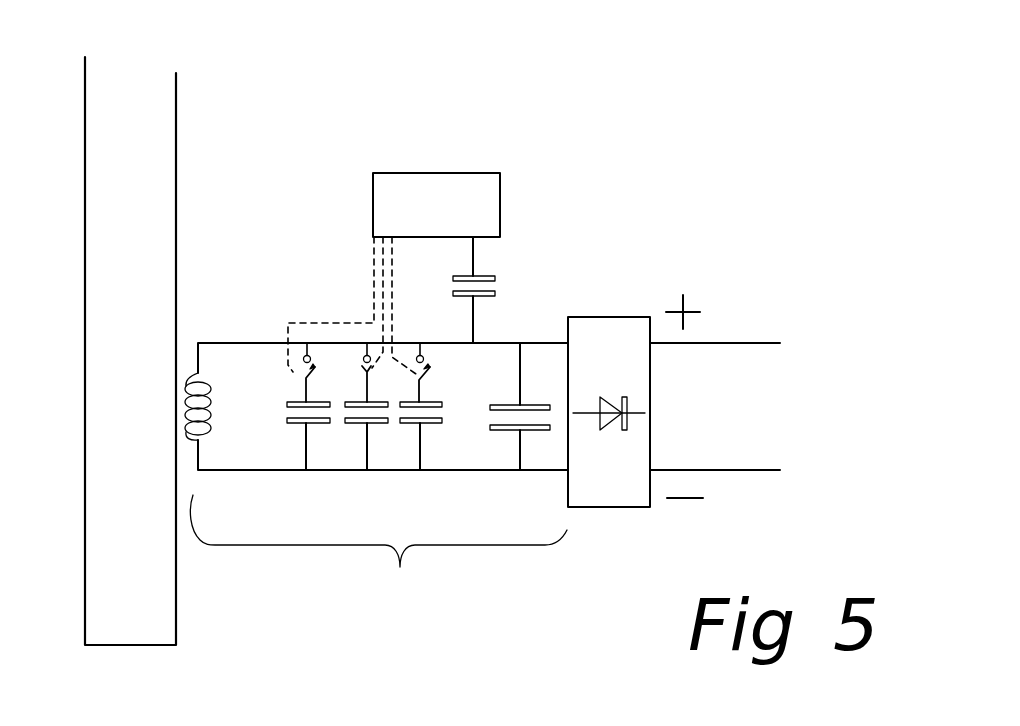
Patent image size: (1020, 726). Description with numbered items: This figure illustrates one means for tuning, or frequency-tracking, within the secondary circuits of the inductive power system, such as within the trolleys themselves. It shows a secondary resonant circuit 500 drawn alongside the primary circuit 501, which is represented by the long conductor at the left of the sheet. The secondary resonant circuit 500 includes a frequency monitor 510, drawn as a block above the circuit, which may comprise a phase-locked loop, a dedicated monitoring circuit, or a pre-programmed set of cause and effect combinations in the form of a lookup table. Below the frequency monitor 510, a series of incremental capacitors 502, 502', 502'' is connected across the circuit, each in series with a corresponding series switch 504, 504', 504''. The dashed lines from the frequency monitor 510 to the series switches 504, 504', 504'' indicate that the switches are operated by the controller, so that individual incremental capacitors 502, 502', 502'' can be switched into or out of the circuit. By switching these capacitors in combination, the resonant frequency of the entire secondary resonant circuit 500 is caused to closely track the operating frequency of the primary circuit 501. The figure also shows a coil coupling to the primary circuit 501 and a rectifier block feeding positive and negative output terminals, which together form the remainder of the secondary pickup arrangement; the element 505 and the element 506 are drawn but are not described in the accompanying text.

The secondary resonant circuit 500 is at (378, 554).
The primary circuit 501 is at (172, 172).
The incremental capacitor 502 is at (285, 471).
The incremental capacitor 502' is at (368, 471).
The incremental capacitor 502'' is at (458, 471).
The series switch 504 is at (278, 279).
The series switch 504' is at (328, 317).
The series switch 504'' is at (499, 326).
The coil / inductor 505 is at (188, 430).
The rectifier 506 is at (727, 267).
The frequency monitor 510 is at (443, 173).